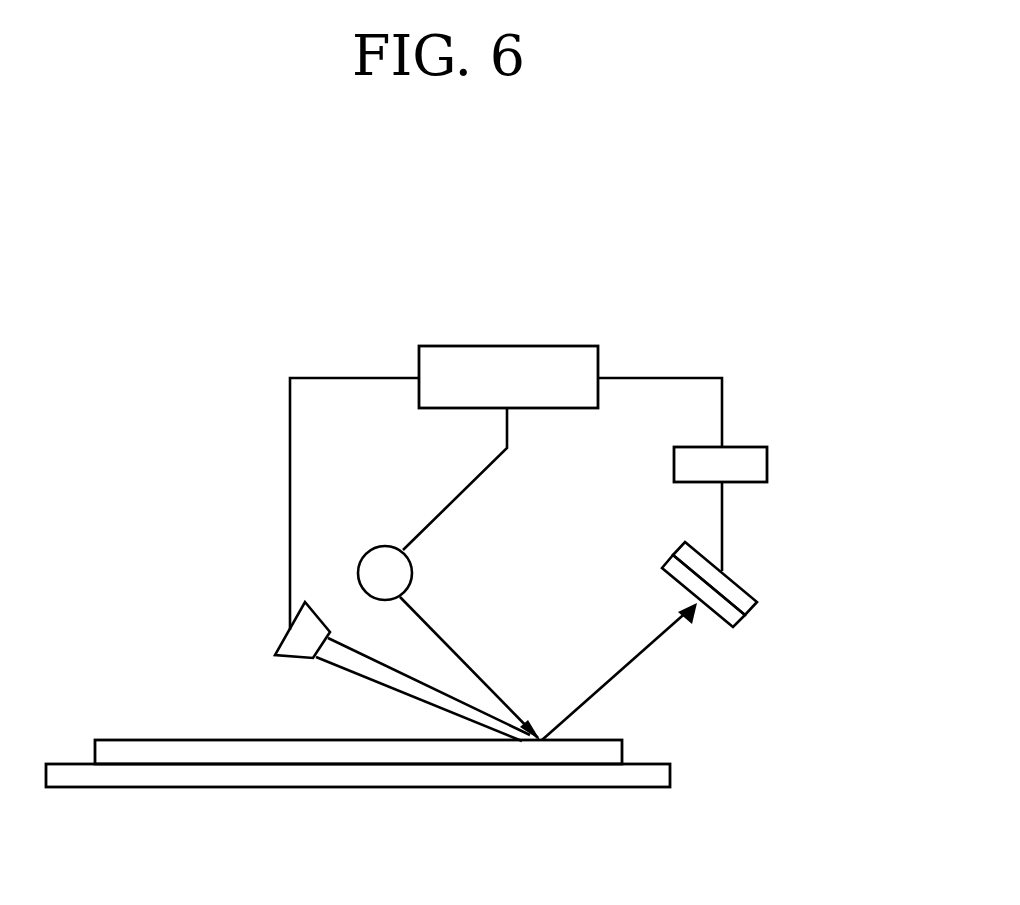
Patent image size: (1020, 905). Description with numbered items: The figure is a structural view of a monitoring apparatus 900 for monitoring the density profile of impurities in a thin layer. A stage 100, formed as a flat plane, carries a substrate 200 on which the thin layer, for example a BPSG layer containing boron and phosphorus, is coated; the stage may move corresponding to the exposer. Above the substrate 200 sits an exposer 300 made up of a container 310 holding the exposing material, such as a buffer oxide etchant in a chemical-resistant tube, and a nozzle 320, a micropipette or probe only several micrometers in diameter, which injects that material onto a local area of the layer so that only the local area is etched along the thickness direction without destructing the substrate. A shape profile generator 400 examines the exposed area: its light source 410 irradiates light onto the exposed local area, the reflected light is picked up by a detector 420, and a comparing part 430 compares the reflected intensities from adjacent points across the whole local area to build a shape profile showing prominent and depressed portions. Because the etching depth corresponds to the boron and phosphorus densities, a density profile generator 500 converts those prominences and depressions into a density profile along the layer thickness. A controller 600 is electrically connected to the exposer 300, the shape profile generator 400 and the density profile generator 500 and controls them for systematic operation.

The stage 100 is at (658, 780).
The substrate 200 is at (610, 752).
The exposer 300 is at (332, 663).
The container 310 is at (283, 638).
The nozzle 320 is at (362, 676).
The shape profile generator 400 is at (726, 641).
The light source 410 is at (392, 580).
The detector 420 is at (740, 617).
The comparing part 430 is at (740, 590).
The density profile generator 500 is at (753, 465).
The controller 600 is at (507, 346).
The monitoring apparatus 900 is at (826, 387).